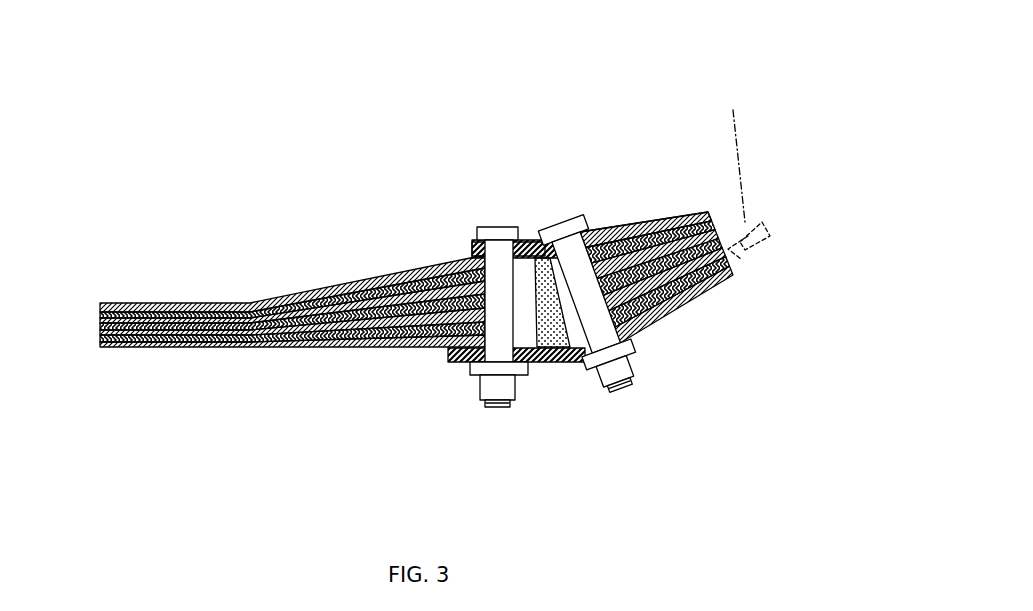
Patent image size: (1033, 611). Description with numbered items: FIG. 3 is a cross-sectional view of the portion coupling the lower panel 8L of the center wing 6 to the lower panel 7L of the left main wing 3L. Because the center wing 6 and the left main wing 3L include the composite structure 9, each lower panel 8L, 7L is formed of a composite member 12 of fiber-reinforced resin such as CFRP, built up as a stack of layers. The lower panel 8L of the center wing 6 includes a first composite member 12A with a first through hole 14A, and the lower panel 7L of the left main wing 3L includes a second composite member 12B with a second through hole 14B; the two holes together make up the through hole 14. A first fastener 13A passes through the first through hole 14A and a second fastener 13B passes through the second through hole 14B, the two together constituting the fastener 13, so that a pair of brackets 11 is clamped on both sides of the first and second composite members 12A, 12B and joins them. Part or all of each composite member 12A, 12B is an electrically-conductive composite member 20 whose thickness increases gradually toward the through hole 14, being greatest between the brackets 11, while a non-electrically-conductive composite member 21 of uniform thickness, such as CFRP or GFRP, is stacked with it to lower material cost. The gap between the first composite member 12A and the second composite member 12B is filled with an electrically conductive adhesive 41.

The center wing 6 is at (250, 224).
The composite member 12 is at (212, 346).
The lower panel of the center wing 8L is at (180, 300).
The first composite member 12A is at (448, 206).
The second composite member 12B is at (688, 156).
The electrically-conductive composite member 20 is at (421, 300).
The non-electrically-conductive composite member 21 is at (377, 305).
The lower panel of the left main wing 7L is at (691, 296).
The left main wing 3L is at (725, 287).
The composite structure 9 is at (395, 147).
The brackets 11 is at (522, 238).
The adhesive 41 is at (562, 370).
The through hole 14 is at (560, 139).
The first through hole 14A is at (475, 226).
The second through hole 14B is at (553, 220).
The fastener 13 is at (622, 494).
The first fastener 13A is at (500, 407).
The second fastener 13B is at (625, 386).